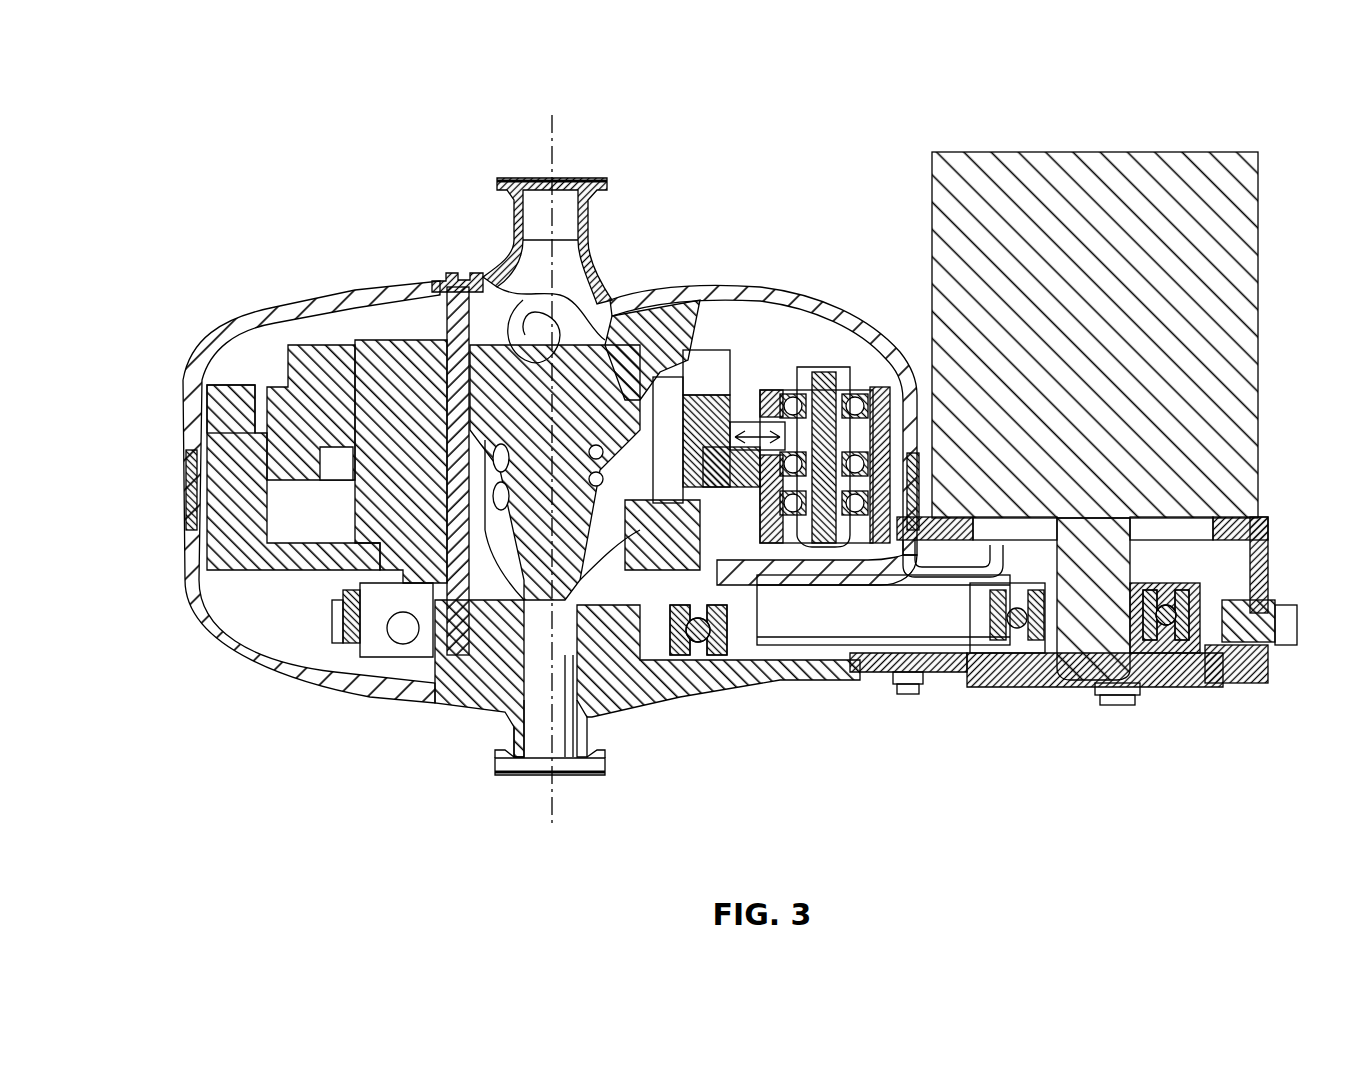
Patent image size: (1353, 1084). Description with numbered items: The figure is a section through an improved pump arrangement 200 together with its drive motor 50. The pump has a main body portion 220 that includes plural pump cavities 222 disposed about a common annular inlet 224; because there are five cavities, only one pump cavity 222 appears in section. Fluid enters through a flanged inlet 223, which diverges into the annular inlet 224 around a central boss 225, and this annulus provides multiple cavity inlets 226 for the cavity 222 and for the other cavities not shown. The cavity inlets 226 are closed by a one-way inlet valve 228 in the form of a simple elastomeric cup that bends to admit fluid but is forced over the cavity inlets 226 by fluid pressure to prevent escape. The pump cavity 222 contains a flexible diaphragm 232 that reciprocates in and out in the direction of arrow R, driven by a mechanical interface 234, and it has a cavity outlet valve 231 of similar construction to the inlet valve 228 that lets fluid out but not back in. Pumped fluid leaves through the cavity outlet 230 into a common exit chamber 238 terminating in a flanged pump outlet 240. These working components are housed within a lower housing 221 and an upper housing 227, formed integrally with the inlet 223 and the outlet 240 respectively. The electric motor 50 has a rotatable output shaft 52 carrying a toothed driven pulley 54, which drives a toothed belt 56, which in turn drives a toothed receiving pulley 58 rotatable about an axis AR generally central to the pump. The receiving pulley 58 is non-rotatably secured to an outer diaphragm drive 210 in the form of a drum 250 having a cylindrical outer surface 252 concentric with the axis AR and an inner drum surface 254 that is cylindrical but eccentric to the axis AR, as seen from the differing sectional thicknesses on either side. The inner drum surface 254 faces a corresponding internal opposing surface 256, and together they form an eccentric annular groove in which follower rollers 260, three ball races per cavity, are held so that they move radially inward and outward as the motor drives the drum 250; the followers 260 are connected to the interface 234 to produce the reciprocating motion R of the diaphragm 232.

The drive motor 50 is at (1113, 152).
The output shaft 52 is at (1097, 688).
The toothed driven pulley 54 is at (1040, 592).
The toothed belt 56 is at (335, 603).
The toothed receiving pulley 58 is at (335, 633).
The pump arrangement 200 is at (352, 155).
The outer diaphragm drive 210 is at (327, 718).
The main body portion 220 is at (355, 340).
The lower housing 221 is at (447, 690).
The pump cavity 222 is at (692, 362).
The flanged inlet 223 is at (532, 776).
The common annular inlet 224 is at (592, 645).
The central boss 225 is at (645, 690).
The cavity inlets 226 is at (727, 657).
The upper housing 227 is at (500, 270).
The one-way inlet valve 228 is at (440, 300).
The cavity outlet 230 is at (605, 343).
The cavity outlet valve 231 is at (670, 398).
The flexible diaphragm 232 is at (745, 420).
The mechanical interface 234 is at (836, 385).
The common exit chamber 238 is at (598, 184).
The flanged pump outlet 240 is at (560, 180).
The drum 250 is at (190, 490).
The cylindrical outer surface 252 is at (212, 400).
The inner drum surface 254 is at (227, 468).
The internal opposing surface 256 is at (325, 493).
The follower rollers 260 is at (855, 385).
The direction of diaphragm reciprocation R is at (760, 430).
The axis AR is at (553, 816).